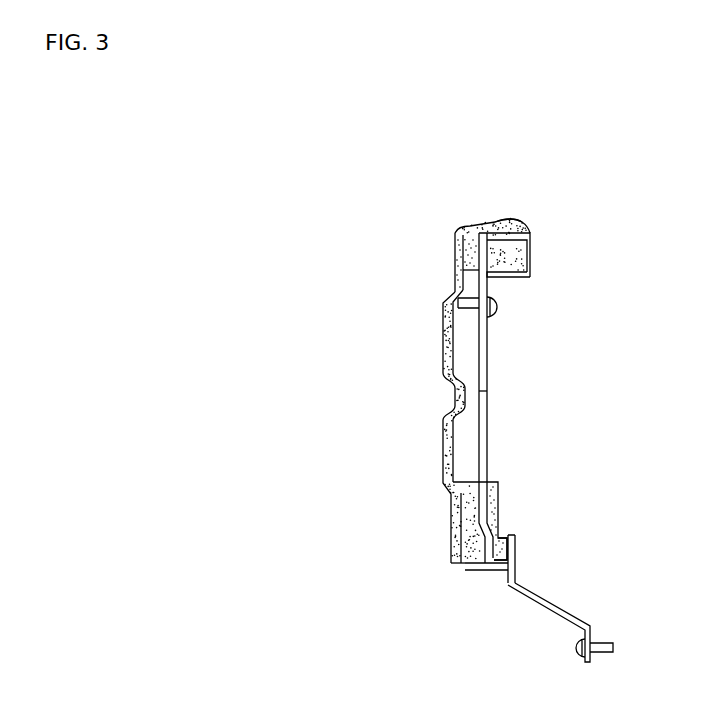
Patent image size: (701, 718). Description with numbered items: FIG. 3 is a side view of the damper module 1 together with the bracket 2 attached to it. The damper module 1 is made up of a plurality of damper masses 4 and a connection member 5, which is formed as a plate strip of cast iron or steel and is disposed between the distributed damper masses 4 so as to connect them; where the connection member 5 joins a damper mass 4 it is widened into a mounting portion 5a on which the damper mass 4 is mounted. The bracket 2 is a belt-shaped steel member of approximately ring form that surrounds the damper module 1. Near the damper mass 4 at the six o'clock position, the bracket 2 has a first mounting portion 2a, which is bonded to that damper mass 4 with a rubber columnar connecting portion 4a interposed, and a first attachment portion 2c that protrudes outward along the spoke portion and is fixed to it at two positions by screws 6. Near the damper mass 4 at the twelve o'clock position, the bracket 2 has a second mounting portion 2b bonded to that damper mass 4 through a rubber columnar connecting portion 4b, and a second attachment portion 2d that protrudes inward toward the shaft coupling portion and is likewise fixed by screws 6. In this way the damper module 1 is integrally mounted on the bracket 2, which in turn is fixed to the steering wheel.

The damper module 1 is at (420, 556).
The bracket 2 is at (504, 388).
The first mounting portion 2a is at (515, 547).
The second mounting portion 2b is at (531, 236).
The first attachment portion 2c is at (590, 628).
The second attachment portion 2d is at (510, 280).
The damper mass 4 is at (491, 203).
The columnar connecting portion 4a is at (503, 538).
The columnar connecting portion 4b is at (514, 217).
The connection member 5 is at (430, 357).
The mounting portion 5a is at (454, 236).
The screw 6 is at (498, 307).